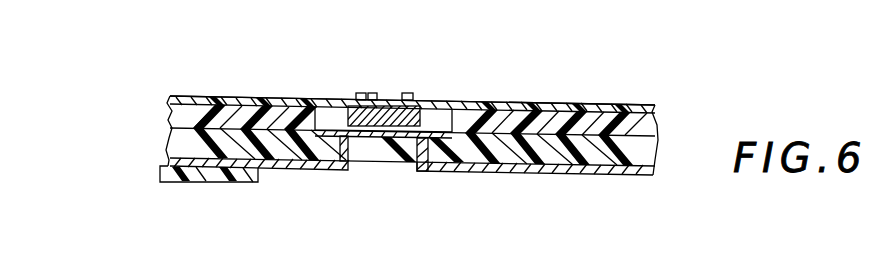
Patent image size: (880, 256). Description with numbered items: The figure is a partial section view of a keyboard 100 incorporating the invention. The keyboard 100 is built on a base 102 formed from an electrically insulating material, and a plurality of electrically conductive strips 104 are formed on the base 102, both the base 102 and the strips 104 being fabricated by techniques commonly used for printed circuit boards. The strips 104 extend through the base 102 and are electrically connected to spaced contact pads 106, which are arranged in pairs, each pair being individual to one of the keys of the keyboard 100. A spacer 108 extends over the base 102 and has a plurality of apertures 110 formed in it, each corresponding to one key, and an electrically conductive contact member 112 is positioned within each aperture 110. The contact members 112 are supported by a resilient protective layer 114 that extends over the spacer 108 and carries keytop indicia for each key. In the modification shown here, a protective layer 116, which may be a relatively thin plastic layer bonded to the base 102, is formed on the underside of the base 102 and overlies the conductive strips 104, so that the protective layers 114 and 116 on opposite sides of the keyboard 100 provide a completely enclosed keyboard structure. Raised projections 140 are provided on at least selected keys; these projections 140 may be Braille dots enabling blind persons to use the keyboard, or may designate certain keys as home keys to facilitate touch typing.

The keyboard 100 is at (228, 90).
The base 102 is at (168, 138).
The electrically conductive strips 104 is at (287, 167).
The contact pads 106 is at (361, 136).
The spacer 108 is at (520, 118).
The aperture 110 is at (448, 122).
The electrically conductive contact member 112 is at (348, 107).
The resilient protective layer 114 is at (606, 105).
The protective layer 116 is at (183, 177).
The raised projections 140 is at (408, 93).